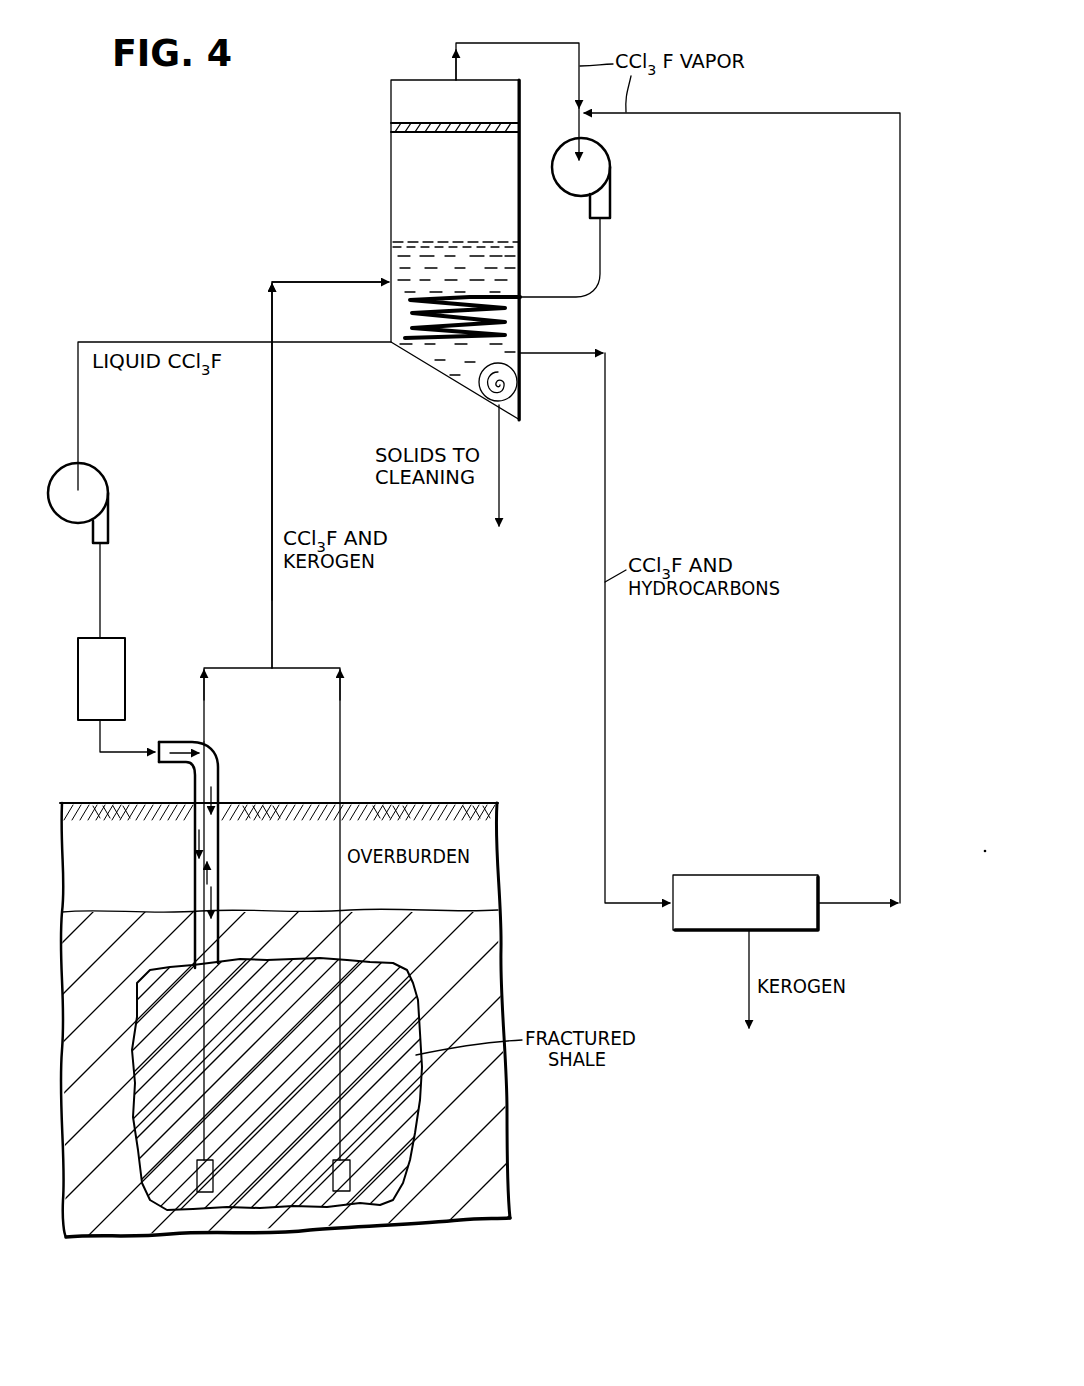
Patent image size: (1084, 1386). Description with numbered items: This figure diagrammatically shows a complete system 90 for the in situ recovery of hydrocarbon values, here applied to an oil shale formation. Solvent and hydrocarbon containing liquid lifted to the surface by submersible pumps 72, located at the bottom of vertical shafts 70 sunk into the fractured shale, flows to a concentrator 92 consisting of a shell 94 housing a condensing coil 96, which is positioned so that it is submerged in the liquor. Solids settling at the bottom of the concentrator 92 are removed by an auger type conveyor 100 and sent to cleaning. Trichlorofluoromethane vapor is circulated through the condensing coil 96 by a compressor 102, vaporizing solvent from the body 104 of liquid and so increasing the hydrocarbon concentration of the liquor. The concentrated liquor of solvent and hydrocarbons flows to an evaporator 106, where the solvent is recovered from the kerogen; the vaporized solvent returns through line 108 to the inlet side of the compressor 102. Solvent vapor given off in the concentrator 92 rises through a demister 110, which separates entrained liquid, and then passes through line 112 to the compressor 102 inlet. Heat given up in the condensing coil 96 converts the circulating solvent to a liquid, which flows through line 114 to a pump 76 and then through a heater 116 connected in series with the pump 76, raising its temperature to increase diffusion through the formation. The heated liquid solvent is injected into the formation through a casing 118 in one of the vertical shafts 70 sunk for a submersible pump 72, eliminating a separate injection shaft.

The system 90 is at (393, 40).
The concentrator 92 is at (387, 188).
The shell 94 is at (391, 150).
The demister 110 is at (391, 118).
The condensing coil 96 is at (474, 297).
The auger type conveyor 100 is at (480, 388).
The compressor 102 is at (612, 184).
The body of liquid 104 is at (510, 270).
The evaporator 106 is at (788, 875).
The line 108 is at (900, 514).
The line 112 is at (534, 43).
The line 114 is at (172, 342).
The pump 76 is at (110, 488).
The heater 116 is at (125, 638).
The casing 118 is at (218, 860).
The vertical shafts 70 is at (345, 1000).
The submersible pumps 72 is at (208, 1193).